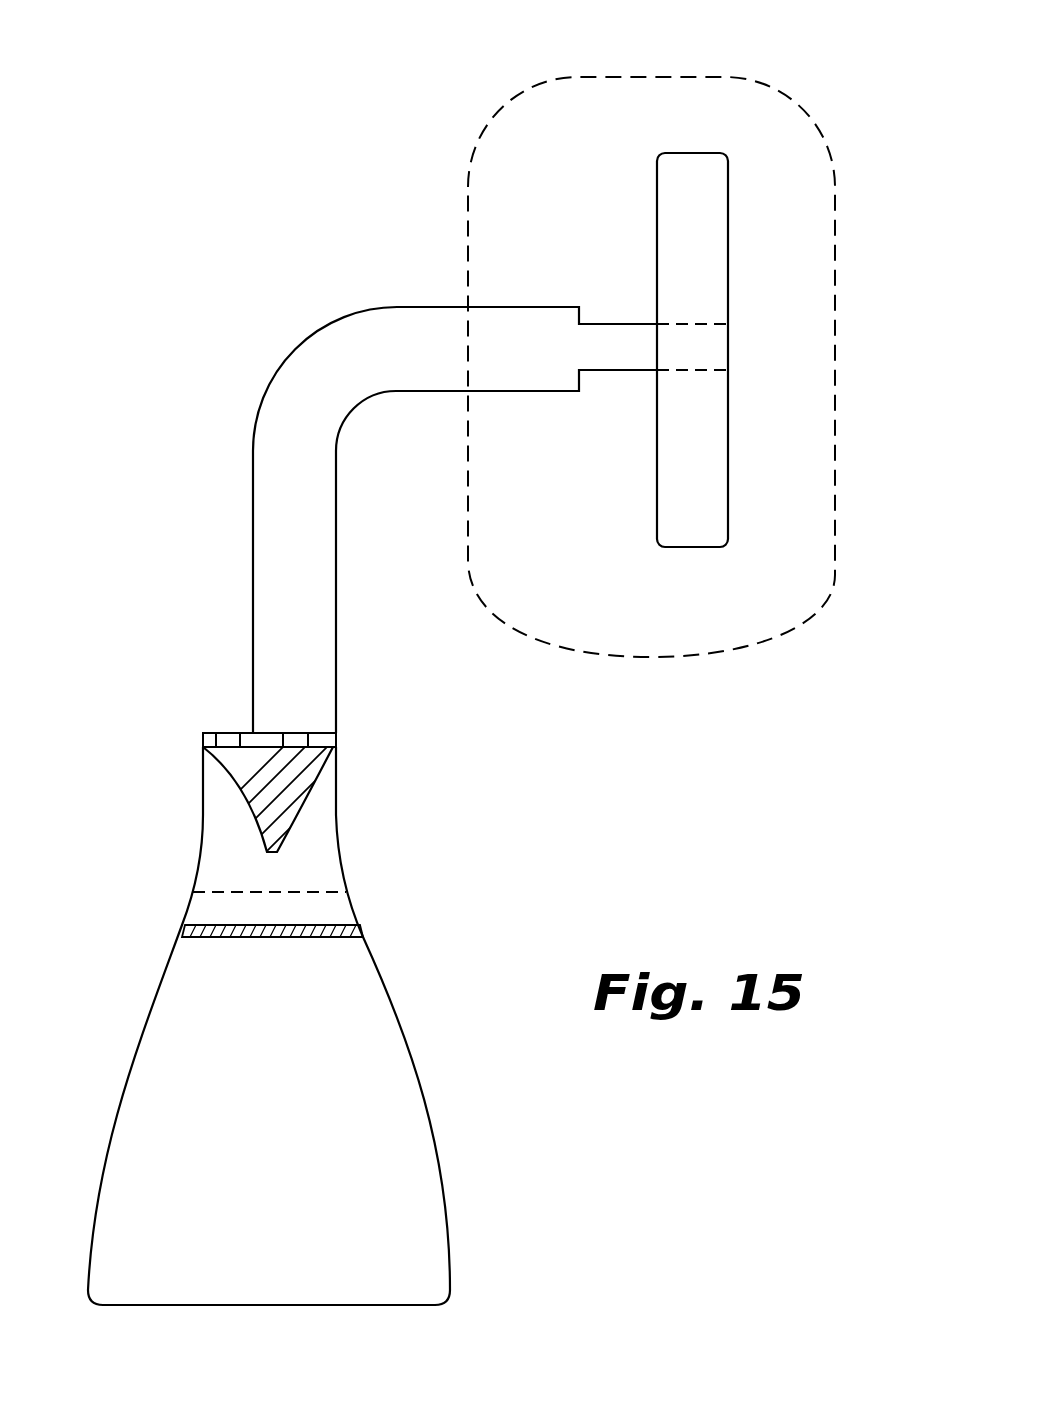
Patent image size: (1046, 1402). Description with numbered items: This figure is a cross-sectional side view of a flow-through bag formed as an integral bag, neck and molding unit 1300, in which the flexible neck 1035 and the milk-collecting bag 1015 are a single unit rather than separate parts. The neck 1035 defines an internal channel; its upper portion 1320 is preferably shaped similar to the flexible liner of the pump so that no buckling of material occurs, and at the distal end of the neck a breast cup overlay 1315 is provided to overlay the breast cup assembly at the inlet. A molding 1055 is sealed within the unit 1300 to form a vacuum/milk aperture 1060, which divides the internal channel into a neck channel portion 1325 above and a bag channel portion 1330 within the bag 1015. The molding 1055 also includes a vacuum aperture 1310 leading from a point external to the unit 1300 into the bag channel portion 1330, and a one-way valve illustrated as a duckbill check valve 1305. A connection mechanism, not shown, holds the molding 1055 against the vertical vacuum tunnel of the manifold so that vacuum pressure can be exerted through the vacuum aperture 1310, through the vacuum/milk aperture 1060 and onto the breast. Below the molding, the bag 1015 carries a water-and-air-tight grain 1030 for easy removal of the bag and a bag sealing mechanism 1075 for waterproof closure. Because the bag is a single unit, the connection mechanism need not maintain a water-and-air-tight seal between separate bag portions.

The integral bag, neck and molding unit 1300 is at (703, 355).
The upper portion of the neck 1320 is at (746, 646).
The breast cup overlay 1315 is at (708, 548).
The flexible neck 1035 is at (250, 540).
The neck channel portion 1325 is at (290, 506).
The vacuum/milk aperture 1060 is at (298, 728).
The vacuum aperture 1310 is at (235, 727).
The molding 1055 is at (342, 741).
The duckbill check valve 1305 is at (300, 798).
The water-and-air-tight grain 1030 is at (348, 892).
The bag sealing mechanism 1075 is at (362, 932).
The milk-collecting bag 1015 is at (472, 1056).
The bag channel portion 1330 is at (303, 1140).